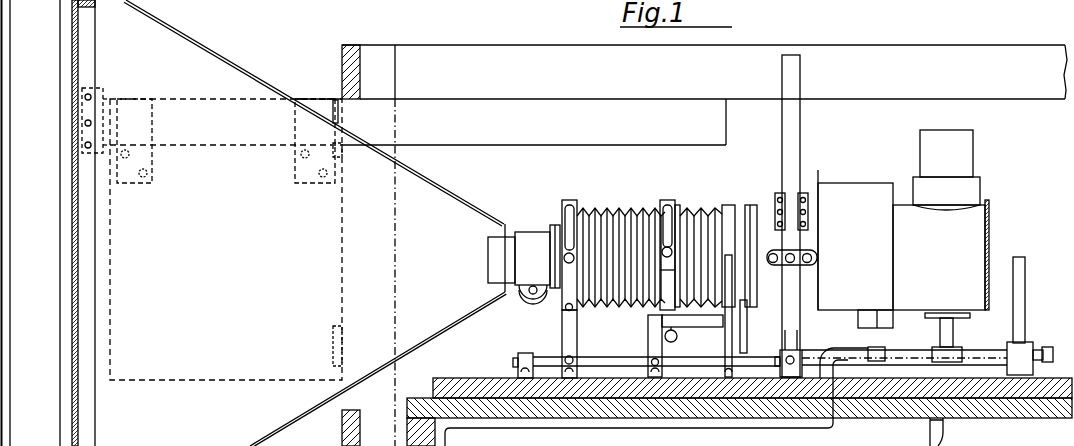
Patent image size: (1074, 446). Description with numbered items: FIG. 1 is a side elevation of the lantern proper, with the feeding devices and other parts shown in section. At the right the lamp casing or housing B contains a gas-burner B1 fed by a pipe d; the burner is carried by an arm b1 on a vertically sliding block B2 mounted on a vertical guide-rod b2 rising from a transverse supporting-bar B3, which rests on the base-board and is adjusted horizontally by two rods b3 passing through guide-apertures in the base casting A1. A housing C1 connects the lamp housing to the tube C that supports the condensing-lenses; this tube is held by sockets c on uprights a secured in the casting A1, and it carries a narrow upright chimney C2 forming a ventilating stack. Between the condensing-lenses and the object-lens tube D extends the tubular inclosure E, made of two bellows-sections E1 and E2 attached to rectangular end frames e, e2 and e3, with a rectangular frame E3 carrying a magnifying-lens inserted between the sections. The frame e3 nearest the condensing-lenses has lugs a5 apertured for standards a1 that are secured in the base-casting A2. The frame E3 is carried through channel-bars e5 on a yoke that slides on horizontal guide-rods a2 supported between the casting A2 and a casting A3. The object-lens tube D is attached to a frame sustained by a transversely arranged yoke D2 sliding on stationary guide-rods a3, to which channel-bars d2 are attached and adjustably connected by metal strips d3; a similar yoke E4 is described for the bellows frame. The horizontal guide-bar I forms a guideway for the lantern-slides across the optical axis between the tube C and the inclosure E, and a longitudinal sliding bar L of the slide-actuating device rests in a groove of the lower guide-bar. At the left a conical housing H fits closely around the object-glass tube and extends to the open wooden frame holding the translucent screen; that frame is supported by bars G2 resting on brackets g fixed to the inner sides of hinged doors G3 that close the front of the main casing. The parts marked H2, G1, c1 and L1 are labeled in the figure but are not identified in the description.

The housing or inclosure H is at (258, 78).
The top plate of casing H2 is at (704, 72).
The bars G2 is at (534, 122).
The screen frame G1 is at (80, 259).
The hinged doors G3 is at (340, 99).
The brackets g is at (153, 128).
The tube D is at (524, 264).
The yoke D2 is at (565, 326).
The metal strips d3 is at (563, 226).
The channel-bars d2 is at (577, 206).
The bellows-section E1 is at (620, 214).
The tubular inclosure E is at (668, 200).
The channel-bars e5 is at (665, 271).
The rectangular frame E3 is at (690, 206).
The rectangular frame e2 is at (680, 212).
The bellows-section E2 is at (722, 245).
The bellows-frame e3 is at (728, 222).
The guide-bar I is at (748, 205).
The upright tube or chimney C2 is at (800, 125).
The tube C is at (780, 212).
The sockets c is at (811, 258).
The standards a1 is at (727, 281).
The uprights a is at (794, 286).
The link pivot block c1 is at (814, 306).
The housing or inclosure C1 is at (855, 249).
The casing or housing of the lamp B is at (941, 220).
The arm b1 is at (993, 362).
The horizontal rods b3 is at (860, 362).
The gas-burner B1 is at (928, 330).
The vertical guide-rod b2 is at (1025, 302).
The socket piece or block B2 is at (1030, 345).
The transverse supporting-bar B3 is at (1022, 368).
The pipe d is at (906, 362).
The rectangular frame e is at (580, 312).
The guide-rods a3 is at (590, 366).
The casting A3 is at (648, 349).
The yoke E4 is at (680, 366).
The base-casting A2 is at (724, 362).
The guide-rods a2 is at (722, 345).
The lugs a5 is at (722, 310).
The sliding bar L is at (742, 348).
The lever arm L1 is at (747, 358).
The base piece or casting A1 is at (785, 343).